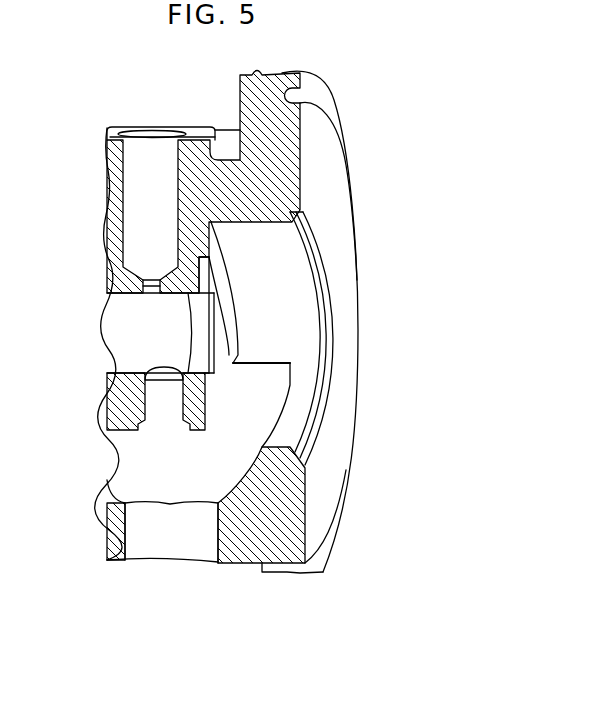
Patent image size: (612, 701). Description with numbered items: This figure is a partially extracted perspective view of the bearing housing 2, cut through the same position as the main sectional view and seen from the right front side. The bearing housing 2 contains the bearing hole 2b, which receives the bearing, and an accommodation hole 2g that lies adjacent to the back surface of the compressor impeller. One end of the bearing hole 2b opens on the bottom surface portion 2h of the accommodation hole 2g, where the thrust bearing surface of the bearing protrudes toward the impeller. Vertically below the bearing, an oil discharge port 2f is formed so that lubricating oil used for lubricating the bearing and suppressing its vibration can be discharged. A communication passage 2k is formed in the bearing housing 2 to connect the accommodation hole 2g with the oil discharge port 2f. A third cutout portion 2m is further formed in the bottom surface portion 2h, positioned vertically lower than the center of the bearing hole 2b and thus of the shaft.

The bearing housing 2 is at (105, 128).
The bearing hole 2b is at (157, 343).
The oil discharge port 2f is at (182, 558).
The accommodation hole 2g is at (290, 253).
The bottom surface portion 2h is at (236, 322).
The communication passage 2k is at (255, 446).
The third cutout portion 2m is at (227, 367).